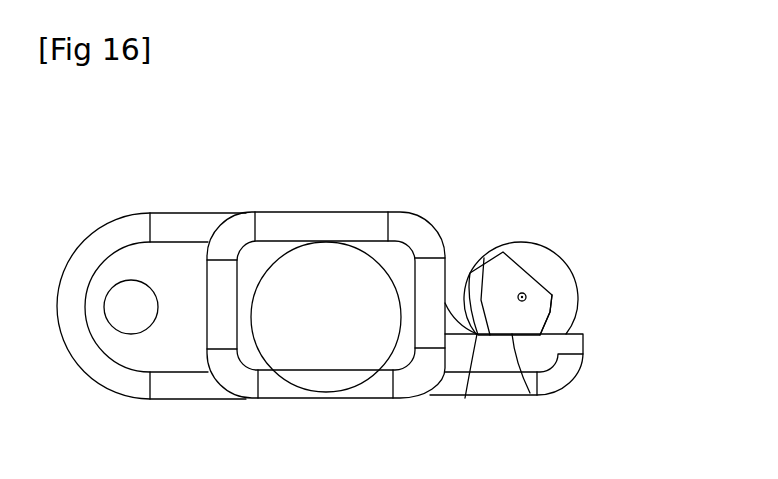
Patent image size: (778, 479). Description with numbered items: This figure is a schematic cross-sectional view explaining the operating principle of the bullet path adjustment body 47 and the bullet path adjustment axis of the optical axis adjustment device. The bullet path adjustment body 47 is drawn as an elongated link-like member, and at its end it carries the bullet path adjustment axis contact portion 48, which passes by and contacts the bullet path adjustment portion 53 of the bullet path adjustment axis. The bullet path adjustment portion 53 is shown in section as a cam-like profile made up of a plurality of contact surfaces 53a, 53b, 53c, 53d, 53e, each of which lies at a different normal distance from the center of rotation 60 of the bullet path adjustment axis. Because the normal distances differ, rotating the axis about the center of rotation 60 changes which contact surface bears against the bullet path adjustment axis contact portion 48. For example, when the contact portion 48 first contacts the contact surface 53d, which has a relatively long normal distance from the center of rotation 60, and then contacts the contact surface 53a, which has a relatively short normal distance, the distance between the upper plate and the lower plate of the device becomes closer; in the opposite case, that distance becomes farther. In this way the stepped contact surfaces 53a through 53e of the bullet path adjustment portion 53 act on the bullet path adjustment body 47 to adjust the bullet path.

The bullet path adjustment body 47 is at (363, 165).
The bullet path adjustment axis contact portion 48 is at (568, 365).
The bullet path adjustment portion 53 is at (580, 198).
The contact surface 53a is at (518, 265).
The contact surface 53b is at (552, 310).
The contact surface 53c is at (530, 393).
The contact surface 53d is at (465, 398).
The contact surface 53e is at (485, 258).
The center of rotation 60 is at (528, 295).